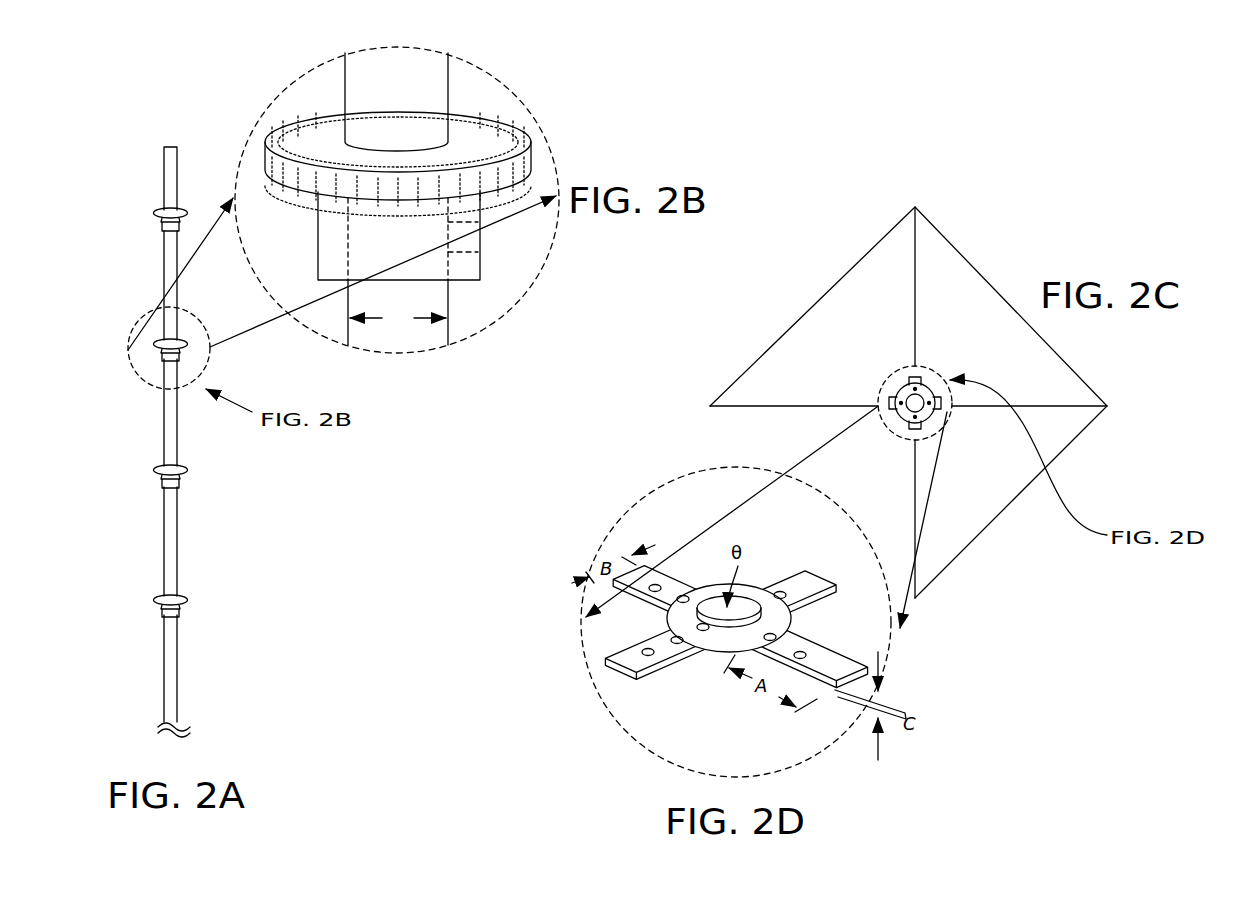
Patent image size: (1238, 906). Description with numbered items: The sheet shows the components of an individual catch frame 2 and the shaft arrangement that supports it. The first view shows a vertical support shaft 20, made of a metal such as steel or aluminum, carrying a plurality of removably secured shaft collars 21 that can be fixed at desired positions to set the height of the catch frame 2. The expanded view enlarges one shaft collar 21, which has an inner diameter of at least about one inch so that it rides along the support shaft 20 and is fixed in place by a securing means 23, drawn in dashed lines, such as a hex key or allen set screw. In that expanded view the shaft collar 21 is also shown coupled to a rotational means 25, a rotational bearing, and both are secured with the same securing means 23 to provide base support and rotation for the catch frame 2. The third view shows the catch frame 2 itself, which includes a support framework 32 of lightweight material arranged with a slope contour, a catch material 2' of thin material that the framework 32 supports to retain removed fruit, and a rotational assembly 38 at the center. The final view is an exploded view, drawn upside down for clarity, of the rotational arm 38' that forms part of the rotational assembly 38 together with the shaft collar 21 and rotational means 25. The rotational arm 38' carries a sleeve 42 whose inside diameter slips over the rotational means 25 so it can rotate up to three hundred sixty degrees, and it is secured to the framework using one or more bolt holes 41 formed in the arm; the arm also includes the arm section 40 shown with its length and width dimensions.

In FIG. 2C, the catch frame 2 is at (877, 339).
In FIG. 2C, the catch material 2' is at (908, 402).
In FIG. 2A, the vertical support shaft 20 is at (173, 563).
In FIG. 2B, the vertical support shaft 20 is at (396, 102).
In FIG. 2A, the shaft collar 21 is at (158, 356).
In FIG. 2B, the shaft collar 21 is at (302, 207).
In FIG. 2B, the securing means 23 is at (486, 242).
In FIG. 2B, the rotational means 25 is at (524, 131).
In FIG. 2C, the support framework 32 is at (914, 242).
In FIG. 2C, the rotational assembly 38 is at (855, 334).
In FIG. 2D, the rotational arm 38' is at (755, 633).
In FIG. 2D, the hub arm 40 is at (827, 667).
In FIG. 2D, the bolt holes 41 is at (676, 644).
In FIG. 2D, the sleeve 42 is at (759, 622).